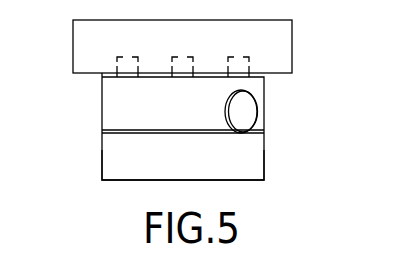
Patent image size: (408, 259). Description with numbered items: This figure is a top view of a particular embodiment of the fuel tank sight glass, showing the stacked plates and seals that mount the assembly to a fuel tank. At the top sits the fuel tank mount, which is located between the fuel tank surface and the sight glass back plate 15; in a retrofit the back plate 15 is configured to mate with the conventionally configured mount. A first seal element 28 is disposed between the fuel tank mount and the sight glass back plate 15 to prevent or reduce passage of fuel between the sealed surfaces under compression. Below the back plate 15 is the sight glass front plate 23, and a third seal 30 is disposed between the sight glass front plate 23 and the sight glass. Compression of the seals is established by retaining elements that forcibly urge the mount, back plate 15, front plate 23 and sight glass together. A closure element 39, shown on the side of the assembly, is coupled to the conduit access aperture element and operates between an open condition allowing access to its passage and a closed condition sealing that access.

The first seal element 28 is at (102, 75).
The sight glass back plate 15 is at (102, 97).
The third seal 30 is at (102, 132).
The sight glass front plate 23 is at (102, 153).
The closure element 39 is at (257, 110).